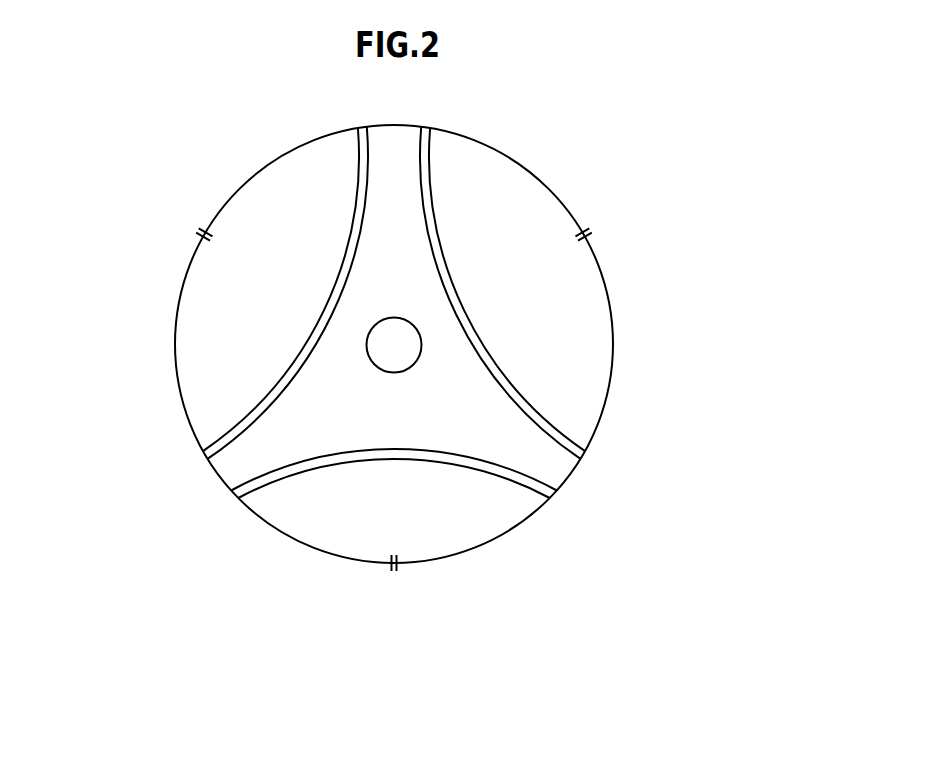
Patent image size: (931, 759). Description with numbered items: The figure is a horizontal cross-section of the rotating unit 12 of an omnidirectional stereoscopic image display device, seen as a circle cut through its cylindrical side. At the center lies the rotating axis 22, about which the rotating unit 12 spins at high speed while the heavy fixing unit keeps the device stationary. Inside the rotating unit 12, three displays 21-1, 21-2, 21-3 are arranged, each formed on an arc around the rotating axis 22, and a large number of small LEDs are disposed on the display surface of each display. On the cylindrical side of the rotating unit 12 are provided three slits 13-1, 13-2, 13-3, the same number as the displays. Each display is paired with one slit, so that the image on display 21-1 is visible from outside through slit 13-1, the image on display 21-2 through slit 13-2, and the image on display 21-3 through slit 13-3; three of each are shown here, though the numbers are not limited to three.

The rotating unit 12 is at (303, 548).
The slit 13-1 is at (205, 232).
The slit 13-2 is at (395, 570).
The slit 13-3 is at (589, 230).
The display 21-1 is at (357, 191).
The display 21-2 is at (487, 472).
The display 21-3 is at (431, 191).
The rotating axis 22 is at (372, 370).